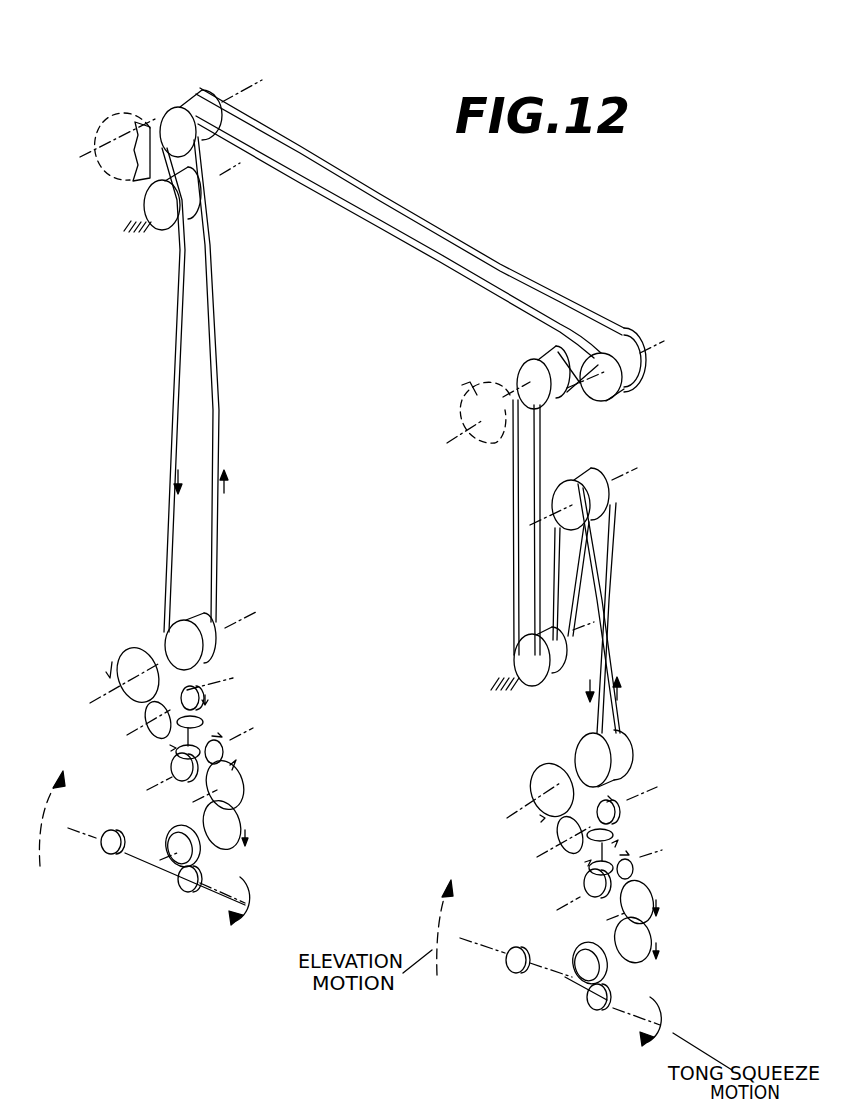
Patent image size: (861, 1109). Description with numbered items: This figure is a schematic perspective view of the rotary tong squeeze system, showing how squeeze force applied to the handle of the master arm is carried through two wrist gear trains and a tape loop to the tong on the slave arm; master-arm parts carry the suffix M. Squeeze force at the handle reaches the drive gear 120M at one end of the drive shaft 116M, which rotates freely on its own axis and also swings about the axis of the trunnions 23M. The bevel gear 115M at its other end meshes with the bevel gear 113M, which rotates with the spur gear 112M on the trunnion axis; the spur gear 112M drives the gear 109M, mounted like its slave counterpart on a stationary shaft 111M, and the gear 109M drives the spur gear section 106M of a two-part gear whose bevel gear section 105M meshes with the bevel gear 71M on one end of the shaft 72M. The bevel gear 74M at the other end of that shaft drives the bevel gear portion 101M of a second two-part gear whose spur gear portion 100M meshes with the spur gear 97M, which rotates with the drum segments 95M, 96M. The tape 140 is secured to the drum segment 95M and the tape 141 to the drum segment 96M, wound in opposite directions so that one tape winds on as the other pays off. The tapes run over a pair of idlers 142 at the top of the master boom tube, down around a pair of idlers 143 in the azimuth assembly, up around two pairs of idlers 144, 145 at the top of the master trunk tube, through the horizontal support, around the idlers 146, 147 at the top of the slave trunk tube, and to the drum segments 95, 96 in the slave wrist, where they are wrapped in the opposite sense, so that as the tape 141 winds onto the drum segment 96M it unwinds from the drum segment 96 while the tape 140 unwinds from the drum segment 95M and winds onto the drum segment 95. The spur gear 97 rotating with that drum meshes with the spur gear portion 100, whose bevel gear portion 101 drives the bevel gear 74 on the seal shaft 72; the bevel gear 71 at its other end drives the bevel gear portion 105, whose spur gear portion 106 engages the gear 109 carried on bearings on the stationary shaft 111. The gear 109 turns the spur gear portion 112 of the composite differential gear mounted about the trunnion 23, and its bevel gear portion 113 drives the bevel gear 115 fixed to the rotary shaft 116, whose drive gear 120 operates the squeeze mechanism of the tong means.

The idler 146 is at (172, 120).
The idler 147 is at (155, 200).
The tape 140 is at (218, 357).
The tape 141 is at (173, 357).
The idlers 144 is at (523, 370).
The idlers 145 is at (622, 400).
The idlers 142 is at (592, 475).
The idlers 143 is at (527, 653).
The drum segment 96 is at (173, 624).
The drum segment 95 is at (214, 637).
The spur gear 97 is at (128, 650).
The spur gear portion 100 is at (146, 716).
The bevel gear portion 101 is at (197, 690).
The bevel gear 74 is at (203, 717).
The bevel gear 71 is at (175, 752).
The seal shaft 72 is at (176, 752).
The bevel gear portion 105 is at (171, 767).
The spur gear portion 106 is at (224, 751).
The stationary shaft 111 is at (258, 760).
The gear 109 is at (245, 793).
The trunnion 23 is at (243, 809).
The spur gear portion 112 is at (234, 849).
The bevel gear portion 113 is at (172, 832).
The rotary shaft 116 is at (130, 860).
The bevel gear 115 is at (190, 893).
The drive gear 120 is at (108, 858).
The drum segment 96M is at (582, 743).
The drum segment 95M is at (623, 736).
The spur gear 97M is at (531, 778).
The spur gear portion 100M is at (558, 832).
The bevel gear portion 101M is at (600, 805).
The bevel gear 74M is at (613, 832).
The shaft 72M is at (612, 858).
The bevel gear 71M is at (590, 868).
The bevel gear section 105M is at (584, 880).
The spur gear section 106M is at (634, 866).
The gear 109M is at (653, 885).
The stationary shaft 111M is at (648, 893).
The trunnions 23M is at (648, 930).
The spur gear 112M is at (643, 958).
The bevel gear 113M is at (578, 943).
The drive gear 120M is at (512, 970).
The drive shaft 116M is at (578, 990).
The bevel gear 115M is at (603, 1012).